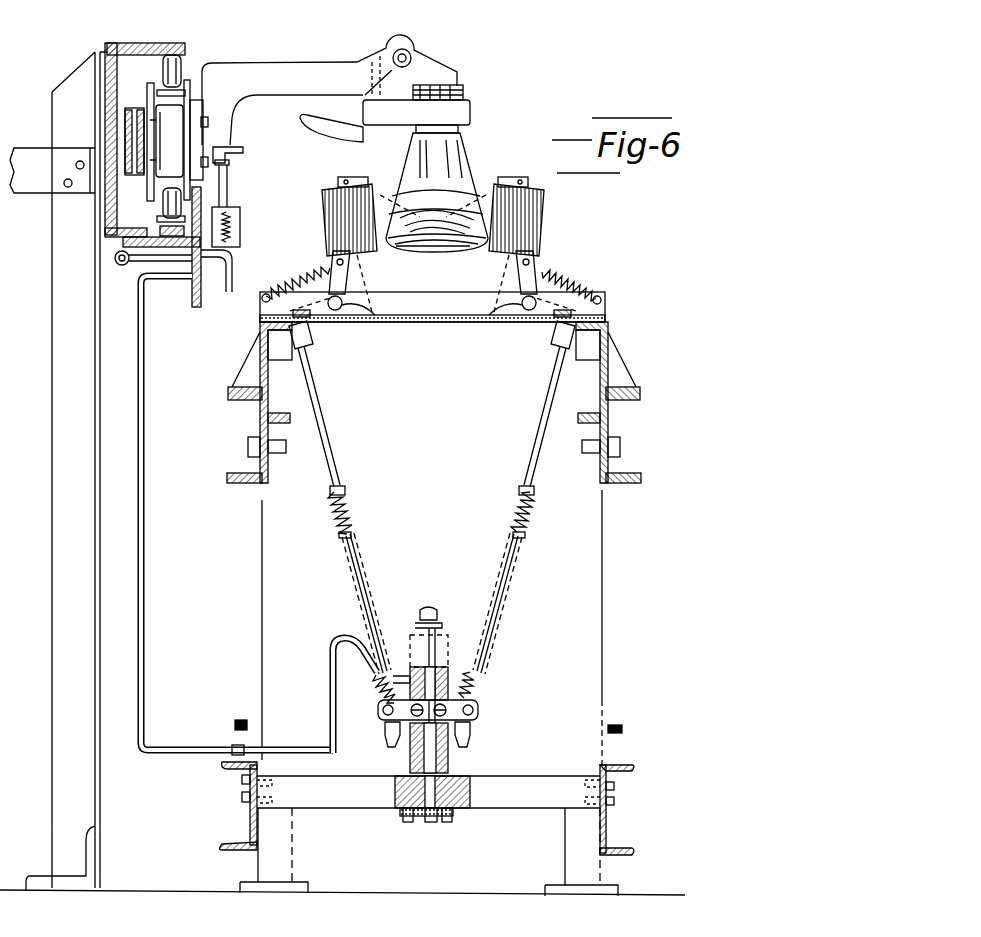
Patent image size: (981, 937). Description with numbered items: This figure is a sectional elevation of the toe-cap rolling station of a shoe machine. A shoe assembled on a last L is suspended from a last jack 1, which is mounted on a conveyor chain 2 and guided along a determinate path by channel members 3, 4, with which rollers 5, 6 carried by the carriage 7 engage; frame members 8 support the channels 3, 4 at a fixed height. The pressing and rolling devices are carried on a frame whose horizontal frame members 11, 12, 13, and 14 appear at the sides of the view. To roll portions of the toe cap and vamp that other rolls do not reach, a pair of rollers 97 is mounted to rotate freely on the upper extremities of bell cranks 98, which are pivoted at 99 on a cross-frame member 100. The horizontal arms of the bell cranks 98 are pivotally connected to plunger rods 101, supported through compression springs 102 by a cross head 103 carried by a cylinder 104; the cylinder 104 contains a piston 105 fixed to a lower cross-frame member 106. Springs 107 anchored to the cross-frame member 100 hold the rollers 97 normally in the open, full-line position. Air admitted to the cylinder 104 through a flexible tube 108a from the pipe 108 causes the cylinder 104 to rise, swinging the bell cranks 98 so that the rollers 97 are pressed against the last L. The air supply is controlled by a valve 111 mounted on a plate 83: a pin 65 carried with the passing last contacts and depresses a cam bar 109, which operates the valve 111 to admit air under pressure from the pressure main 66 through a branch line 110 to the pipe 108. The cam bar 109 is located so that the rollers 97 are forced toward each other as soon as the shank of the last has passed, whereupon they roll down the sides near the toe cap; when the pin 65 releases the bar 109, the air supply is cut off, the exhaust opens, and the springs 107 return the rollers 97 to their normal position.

The last jack 1 is at (265, 78).
The conveyor chain 2 is at (125, 128).
The channel member 3 is at (183, 57).
The channel member 4 is at (162, 228).
The roller 5 is at (186, 82).
The roller 6 is at (163, 203).
The carriage 7 is at (180, 146).
The frame member 8 is at (70, 348).
The horizontal frame member 11 is at (262, 415).
The horizontal frame member 12 is at (608, 428).
The horizontal frame member 13 is at (253, 812).
The horizontal frame member 14 is at (607, 827).
The pin 65 is at (233, 153).
The pressure main 66 is at (113, 259).
The plate 83 is at (202, 300).
The roller 97 is at (337, 203).
The bell crank 98 is at (332, 268).
The pivot 99 is at (531, 325).
The cross-frame member 100 is at (468, 305).
The plunger rod 101 is at (322, 428).
The compression spring 102 is at (377, 506).
The cross head 103 is at (478, 703).
The cylinder 104 is at (485, 680).
The piston 105 is at (470, 745).
The cross-frame member 106 is at (386, 792).
The spring 107 is at (296, 282).
The pipe 108 is at (140, 700).
The flexible tube 108a is at (360, 668).
The cam bar 109 is at (242, 158).
The branch line 110 is at (177, 265).
The valve 111 is at (236, 207).
The last L is at (445, 153).